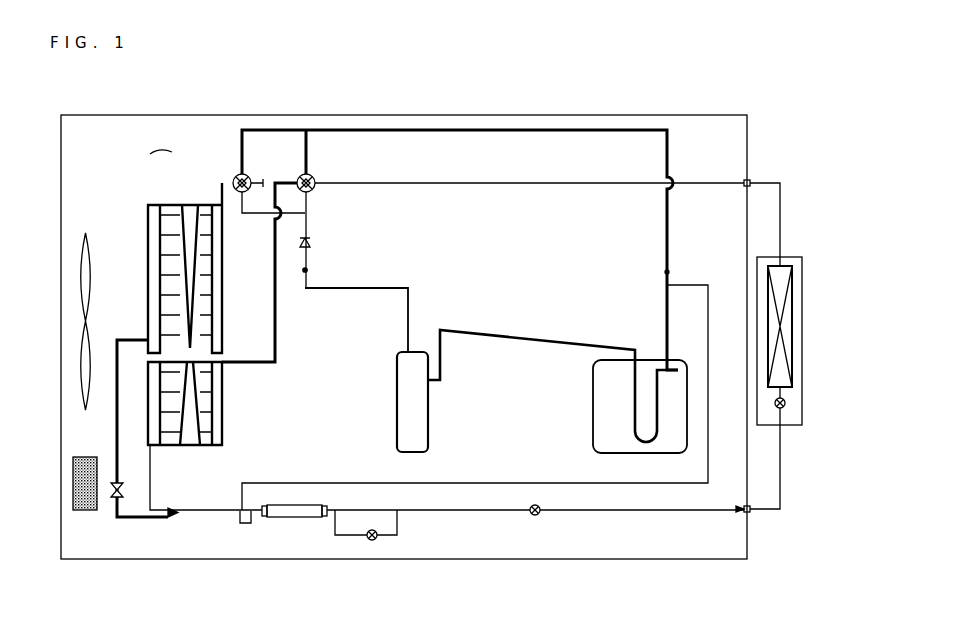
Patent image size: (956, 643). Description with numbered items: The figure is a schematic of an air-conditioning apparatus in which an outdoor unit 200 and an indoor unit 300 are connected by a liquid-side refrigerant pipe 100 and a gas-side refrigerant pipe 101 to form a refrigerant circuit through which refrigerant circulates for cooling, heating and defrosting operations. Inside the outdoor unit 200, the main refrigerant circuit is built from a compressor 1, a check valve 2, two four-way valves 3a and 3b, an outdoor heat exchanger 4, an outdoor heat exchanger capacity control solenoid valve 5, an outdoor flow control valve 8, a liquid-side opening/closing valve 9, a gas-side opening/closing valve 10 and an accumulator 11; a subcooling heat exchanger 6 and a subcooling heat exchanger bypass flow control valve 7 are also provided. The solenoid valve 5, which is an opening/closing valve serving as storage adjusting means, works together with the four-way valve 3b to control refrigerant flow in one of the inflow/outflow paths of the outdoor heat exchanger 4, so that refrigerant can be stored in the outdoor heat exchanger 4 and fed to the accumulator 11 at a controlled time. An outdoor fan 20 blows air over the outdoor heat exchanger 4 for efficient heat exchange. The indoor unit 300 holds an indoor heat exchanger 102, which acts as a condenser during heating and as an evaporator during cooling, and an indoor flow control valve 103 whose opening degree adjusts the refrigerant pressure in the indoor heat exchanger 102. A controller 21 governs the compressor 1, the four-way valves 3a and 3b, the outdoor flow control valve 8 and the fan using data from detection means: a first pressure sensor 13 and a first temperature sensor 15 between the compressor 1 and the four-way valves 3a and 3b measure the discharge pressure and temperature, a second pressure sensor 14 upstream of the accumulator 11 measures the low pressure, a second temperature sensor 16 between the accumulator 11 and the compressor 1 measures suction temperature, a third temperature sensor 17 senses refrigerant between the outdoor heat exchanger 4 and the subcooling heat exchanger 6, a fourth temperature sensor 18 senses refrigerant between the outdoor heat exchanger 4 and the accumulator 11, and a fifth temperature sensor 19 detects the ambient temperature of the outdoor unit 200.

The compressor 1 is at (430, 420).
The check valve 2 is at (312, 243).
The four-way valve 3a is at (252, 179).
The four-way valve 3b is at (316, 181).
The outdoor heat exchanger 4 is at (146, 205).
The outdoor heat exchanger capacity control solenoid valve 5 is at (121, 498).
The subcooling heat exchanger 6 is at (298, 505).
The subcooling heat exchanger bypass flow control valve 7 is at (366, 538).
The outdoor flow control valve 8 is at (530, 514).
The liquid-side opening/closing valve 9 is at (742, 512).
The gas-side opening/closing valve 10 is at (742, 186).
The accumulator 11 is at (593, 392).
The first pressure sensor 13 is at (310, 271).
The second pressure sensor 14 is at (670, 273).
The first temperature sensor 15 is at (388, 344).
The second temperature sensor 16 is at (450, 357).
The third temperature sensor 17 is at (203, 503).
The fourth temperature sensor 18 is at (612, 139).
The fifth temperature sensor 19 is at (172, 152).
The outdoor fan 20 is at (86, 239).
The controller 21 is at (87, 447).
The liquid-side refrigerant pipe 100 is at (752, 513).
The gas-side refrigerant pipe 101 is at (753, 182).
The indoor heat exchanger 102 is at (770, 262).
The indoor flow control valve 103 is at (777, 409).
The outdoor unit 200 is at (670, 560).
The indoor unit 300 is at (780, 428).